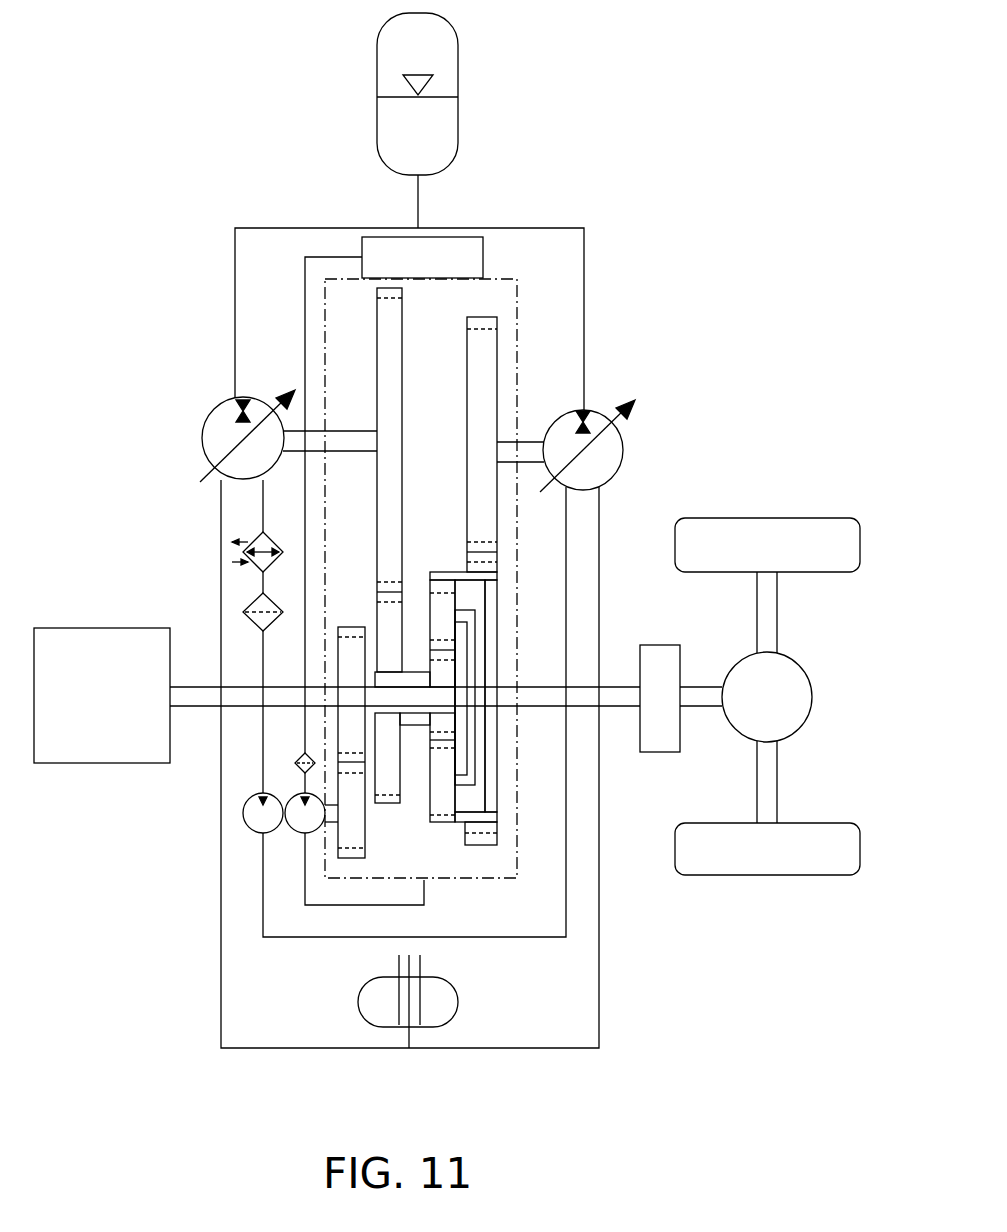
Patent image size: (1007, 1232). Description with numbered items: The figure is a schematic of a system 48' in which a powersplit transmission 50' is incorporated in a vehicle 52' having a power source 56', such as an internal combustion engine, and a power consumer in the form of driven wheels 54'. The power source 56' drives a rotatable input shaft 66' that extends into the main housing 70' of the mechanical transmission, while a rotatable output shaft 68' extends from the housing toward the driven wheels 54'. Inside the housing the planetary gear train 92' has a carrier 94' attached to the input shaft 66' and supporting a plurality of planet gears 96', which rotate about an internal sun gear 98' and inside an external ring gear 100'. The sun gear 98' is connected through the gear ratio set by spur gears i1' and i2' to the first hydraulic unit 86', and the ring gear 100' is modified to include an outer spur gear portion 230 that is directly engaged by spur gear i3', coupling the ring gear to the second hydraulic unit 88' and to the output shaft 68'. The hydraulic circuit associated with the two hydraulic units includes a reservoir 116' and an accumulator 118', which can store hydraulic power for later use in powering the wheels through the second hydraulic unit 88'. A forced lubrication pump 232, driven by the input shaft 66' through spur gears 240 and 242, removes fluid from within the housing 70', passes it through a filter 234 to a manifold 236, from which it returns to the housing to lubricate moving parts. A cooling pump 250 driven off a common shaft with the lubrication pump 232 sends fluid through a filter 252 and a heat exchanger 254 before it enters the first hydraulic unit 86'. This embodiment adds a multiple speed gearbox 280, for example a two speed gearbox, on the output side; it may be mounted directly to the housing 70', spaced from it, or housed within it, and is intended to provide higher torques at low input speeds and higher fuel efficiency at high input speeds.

The accumulator 118' is at (489, 116).
The manifold 236 is at (453, 245).
The powersplit transmission 50' is at (442, 262).
The system 48' is at (493, 591).
The planetary gear train 92' is at (483, 536).
The main housing 70' is at (407, 604).
The first hydraulic unit 86' is at (251, 435).
The second hydraulic unit 88' is at (605, 446).
The vehicle 52' is at (104, 460).
The heat exchanger 254 is at (258, 543).
The filter 252 is at (245, 625).
The filter 234 is at (292, 762).
The cooling pump 250 is at (255, 815).
The forced lubrication pump 232 is at (297, 825).
The power source 56' is at (95, 663).
The input shaft 66' is at (405, 672).
The output shaft 68' is at (621, 739).
The multiple speed gearbox 280 is at (662, 752).
The driven wheels 54' is at (767, 700).
The reservoir 116' is at (517, 1001).
The spur gear i1' is at (362, 702).
The spur gear i2' is at (412, 545).
The spur gear i3' is at (459, 581).
The planet gears 96' is at (436, 698).
The ring gear 100' is at (549, 697).
The outer spur gear portion 230 is at (480, 572).
The carrier 94' is at (509, 697).
The sun gear 98' is at (402, 790).
The spur gear 240 is at (348, 652).
The spur gear 242 is at (350, 835).